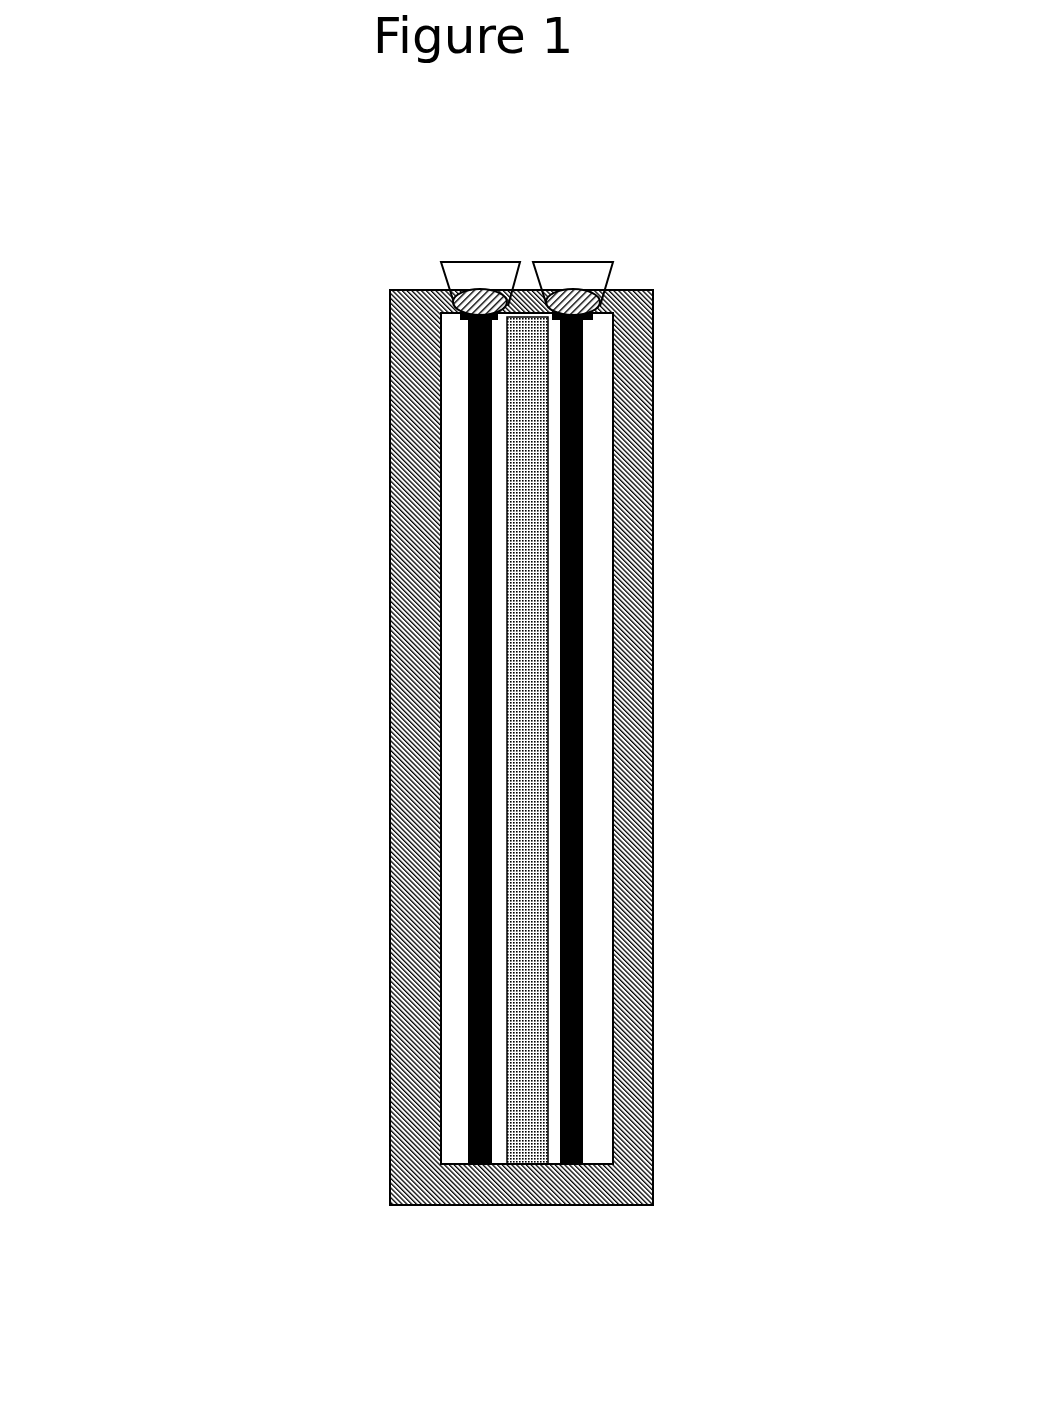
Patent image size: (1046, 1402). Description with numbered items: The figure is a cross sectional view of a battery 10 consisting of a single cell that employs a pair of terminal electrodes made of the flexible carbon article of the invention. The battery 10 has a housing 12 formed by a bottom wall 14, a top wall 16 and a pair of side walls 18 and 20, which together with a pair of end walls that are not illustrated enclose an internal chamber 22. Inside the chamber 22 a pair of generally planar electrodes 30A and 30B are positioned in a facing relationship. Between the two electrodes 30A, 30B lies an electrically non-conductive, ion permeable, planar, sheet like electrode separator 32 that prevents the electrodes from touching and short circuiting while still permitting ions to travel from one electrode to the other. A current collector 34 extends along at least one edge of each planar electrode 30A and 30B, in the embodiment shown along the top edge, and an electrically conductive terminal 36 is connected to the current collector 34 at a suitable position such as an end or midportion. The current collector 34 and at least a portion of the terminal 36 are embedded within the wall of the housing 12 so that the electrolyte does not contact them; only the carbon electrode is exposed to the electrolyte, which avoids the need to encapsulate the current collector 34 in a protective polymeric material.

The battery 10 is at (282, 606).
The housing 12 is at (682, 537).
The bottom wall 14 is at (493, 1191).
The top wall 16 is at (530, 297).
The side wall 18 is at (412, 773).
The side wall 20 is at (640, 1120).
The internal chamber 22 is at (600, 456).
The planar electrode 30A is at (465, 493).
The planar electrode 30B is at (582, 897).
The electrode separator 32 is at (527, 970).
The current collector 34 is at (598, 306).
The electrically conductive terminal 36 is at (613, 278).